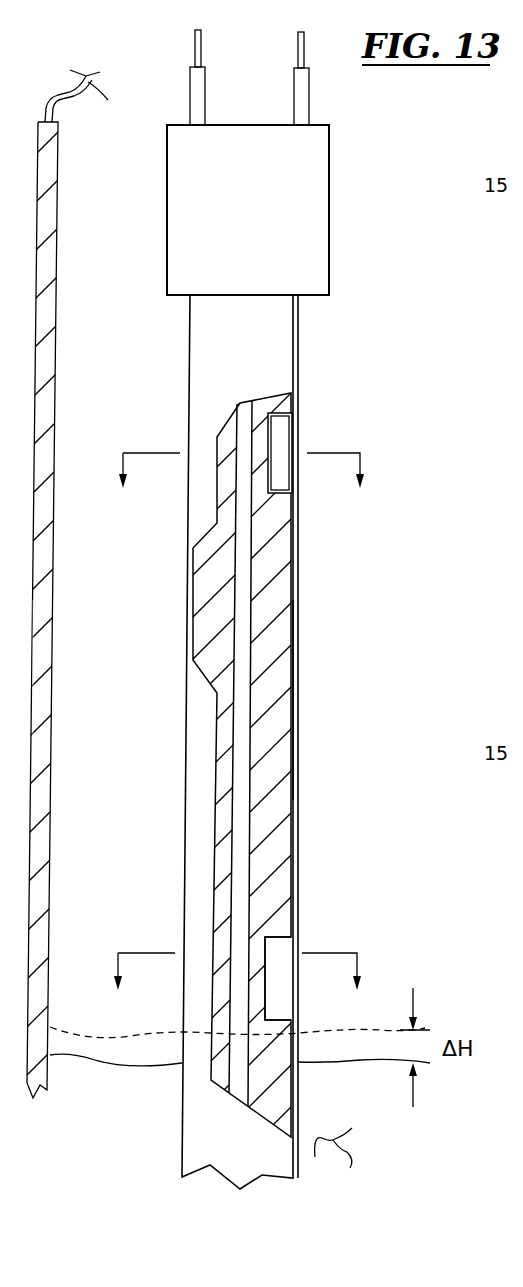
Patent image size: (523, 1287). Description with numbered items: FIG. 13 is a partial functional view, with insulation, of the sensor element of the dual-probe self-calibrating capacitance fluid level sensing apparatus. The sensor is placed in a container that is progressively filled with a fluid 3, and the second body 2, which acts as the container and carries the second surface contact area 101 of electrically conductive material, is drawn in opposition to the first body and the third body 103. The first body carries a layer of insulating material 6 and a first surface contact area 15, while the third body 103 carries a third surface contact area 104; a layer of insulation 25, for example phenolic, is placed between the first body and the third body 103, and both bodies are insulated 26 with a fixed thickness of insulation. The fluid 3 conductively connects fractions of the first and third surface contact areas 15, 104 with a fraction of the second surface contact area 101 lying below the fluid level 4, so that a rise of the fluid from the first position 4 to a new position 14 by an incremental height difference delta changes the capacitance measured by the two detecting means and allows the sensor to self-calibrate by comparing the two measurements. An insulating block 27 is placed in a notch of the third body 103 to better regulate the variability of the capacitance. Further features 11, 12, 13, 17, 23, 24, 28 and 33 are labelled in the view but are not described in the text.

The second body 2 is at (50, 840).
The fluid 3 is at (337, 1166).
The fluid level 4 is at (327, 1063).
The layer of insulating material 6 is at (293, 168).
The lead wire 11 is at (72, 98).
The electrode lead 12 is at (310, 73).
The conductor wire 13 is at (305, 48).
The new position 14 is at (242, 484).
The first surface contact area 15 is at (238, 985).
The outer tube wall 17 is at (296, 690).
The electrode lead 23 is at (191, 105).
The conductor wire 24 is at (195, 45).
The layer of insulation 25 is at (243, 823).
The insulation 26 is at (205, 378).
The insulating block 27 is at (283, 430).
The notch 28 is at (280, 953).
The sensor assembly 33 is at (286, 619).
The second surface contact area 101 is at (52, 703).
The third body 103 is at (290, 619).
The third surface contact area 104 is at (297, 330).